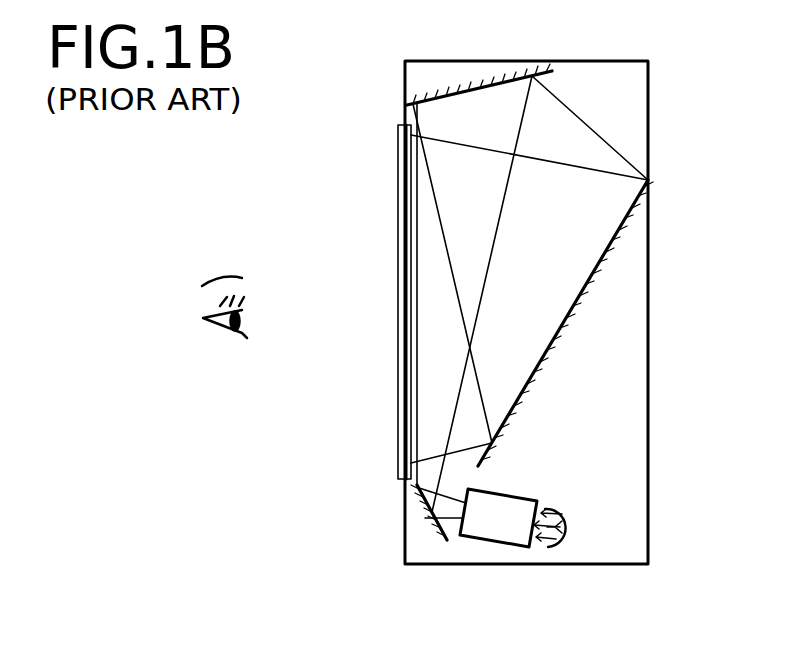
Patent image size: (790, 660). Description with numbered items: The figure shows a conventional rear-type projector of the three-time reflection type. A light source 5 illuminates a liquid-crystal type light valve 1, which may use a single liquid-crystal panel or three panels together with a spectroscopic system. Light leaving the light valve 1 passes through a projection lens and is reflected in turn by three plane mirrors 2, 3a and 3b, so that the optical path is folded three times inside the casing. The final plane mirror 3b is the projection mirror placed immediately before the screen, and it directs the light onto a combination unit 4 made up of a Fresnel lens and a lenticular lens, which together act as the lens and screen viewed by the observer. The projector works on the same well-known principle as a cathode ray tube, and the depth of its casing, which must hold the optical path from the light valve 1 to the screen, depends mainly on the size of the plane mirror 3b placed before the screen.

The liquid-crystal type light valve 1 is at (503, 534).
The plane mirror 2 is at (417, 500).
The plane mirror 3a is at (490, 82).
The plane mirror 3b is at (602, 267).
The combination of a Fresnel lens and a lenticular lens 4 is at (398, 237).
The light source 5 is at (552, 546).